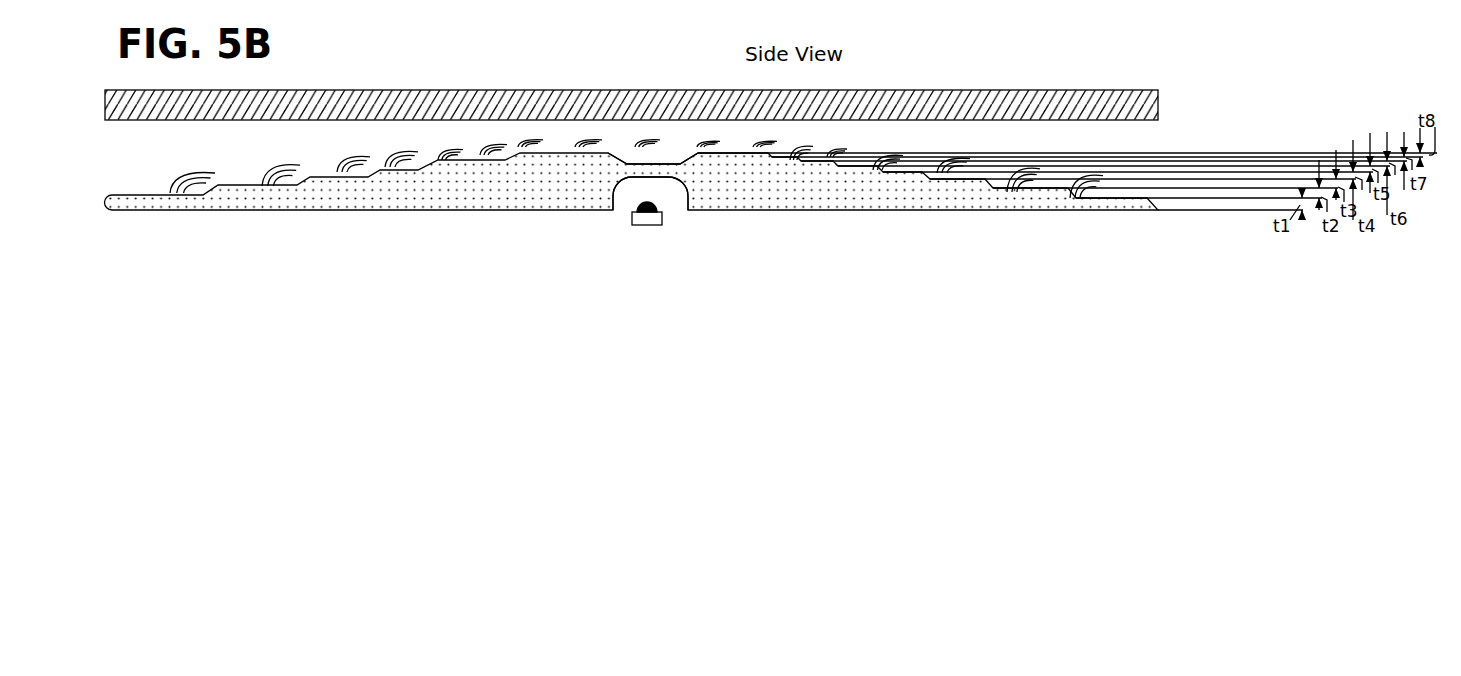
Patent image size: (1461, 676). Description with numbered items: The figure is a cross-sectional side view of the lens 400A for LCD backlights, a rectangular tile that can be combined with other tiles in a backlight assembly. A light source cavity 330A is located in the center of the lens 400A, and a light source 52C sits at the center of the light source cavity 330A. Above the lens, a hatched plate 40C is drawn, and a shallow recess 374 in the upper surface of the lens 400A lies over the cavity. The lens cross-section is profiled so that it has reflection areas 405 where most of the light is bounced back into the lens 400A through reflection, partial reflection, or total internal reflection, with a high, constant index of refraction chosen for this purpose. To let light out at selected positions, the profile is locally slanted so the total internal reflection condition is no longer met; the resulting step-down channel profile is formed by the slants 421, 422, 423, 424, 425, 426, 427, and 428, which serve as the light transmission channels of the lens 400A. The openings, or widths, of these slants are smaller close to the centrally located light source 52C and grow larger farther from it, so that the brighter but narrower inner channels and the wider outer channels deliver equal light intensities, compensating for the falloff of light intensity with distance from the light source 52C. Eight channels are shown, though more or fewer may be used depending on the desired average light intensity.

The lens 400A is at (442, 53).
The cover layer 40C is at (1133, 104).
The recess 374 is at (637, 162).
The reflection areas 405 is at (437, 163).
The light source cavity 330A is at (636, 191).
The light source 52C is at (650, 219).
The slant 428 is at (768, 155).
The slant 427 is at (797, 158).
The slant 426 is at (833, 163).
The slant 425 is at (877, 168).
The slant 424 is at (922, 175).
The slant 423 is at (987, 184).
The slant 422 is at (1070, 192).
The slant 421 is at (1149, 202).